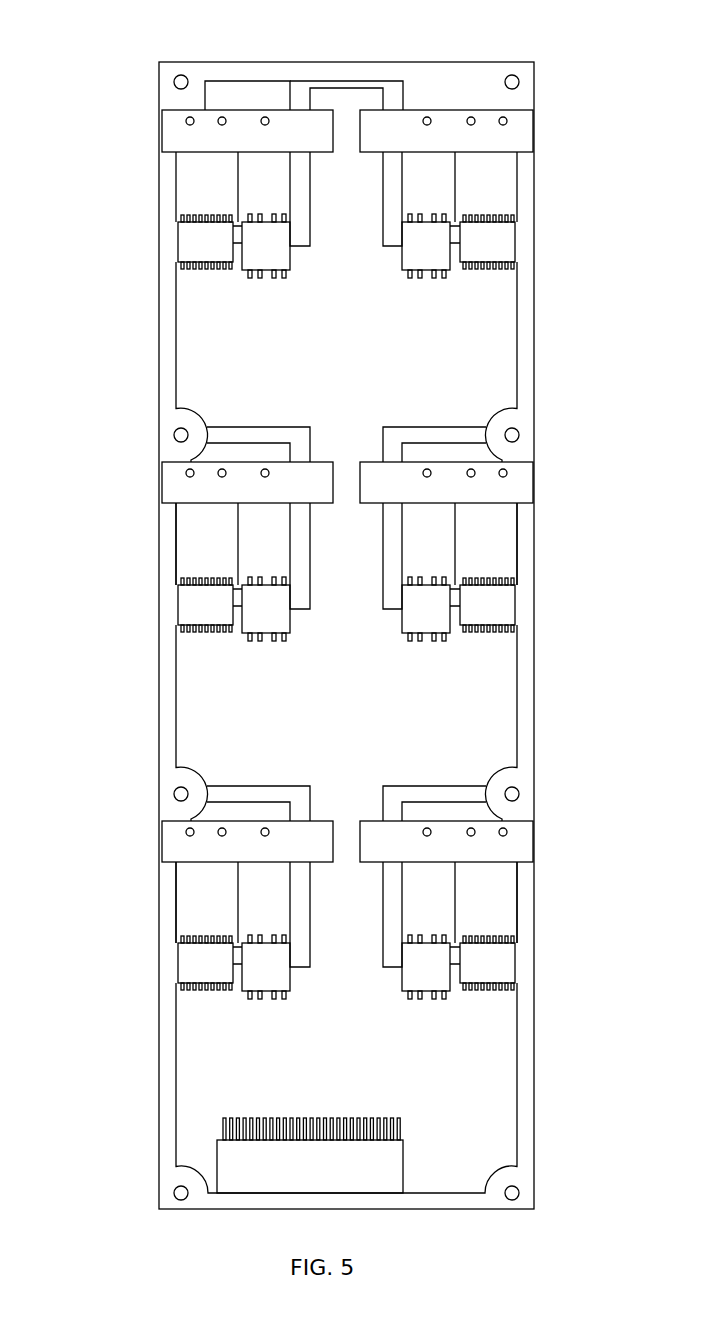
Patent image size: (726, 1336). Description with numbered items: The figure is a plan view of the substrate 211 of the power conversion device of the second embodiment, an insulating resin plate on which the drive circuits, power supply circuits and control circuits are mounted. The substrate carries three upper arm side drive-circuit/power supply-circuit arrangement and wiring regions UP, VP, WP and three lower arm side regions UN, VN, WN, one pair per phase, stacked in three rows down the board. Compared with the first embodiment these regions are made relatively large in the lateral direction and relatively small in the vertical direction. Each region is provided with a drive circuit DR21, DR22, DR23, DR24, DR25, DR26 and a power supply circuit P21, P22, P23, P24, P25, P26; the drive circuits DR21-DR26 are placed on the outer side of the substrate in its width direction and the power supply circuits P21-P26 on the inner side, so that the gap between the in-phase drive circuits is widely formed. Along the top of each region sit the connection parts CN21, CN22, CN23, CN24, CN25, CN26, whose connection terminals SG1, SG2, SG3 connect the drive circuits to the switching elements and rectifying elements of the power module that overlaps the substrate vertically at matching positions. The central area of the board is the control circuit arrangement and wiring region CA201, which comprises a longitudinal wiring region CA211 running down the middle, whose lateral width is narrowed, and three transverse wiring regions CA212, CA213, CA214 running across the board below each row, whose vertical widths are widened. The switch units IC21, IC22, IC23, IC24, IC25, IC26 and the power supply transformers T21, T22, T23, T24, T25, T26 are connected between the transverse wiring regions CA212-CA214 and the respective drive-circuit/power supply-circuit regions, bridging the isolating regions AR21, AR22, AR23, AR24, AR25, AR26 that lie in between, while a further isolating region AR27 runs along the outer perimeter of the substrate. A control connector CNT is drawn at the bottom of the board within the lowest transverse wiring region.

The substrate 211 is at (540, 348).
The upper arm side drive-circuit/power supply-circuit arrangement and wiring region UP is at (243, 96).
The lower arm side drive-circuit/power supply-circuit arrangement and wiring region UN is at (461, 96).
The upper arm side drive-circuit/power supply-circuit arrangement and wiring region VP is at (172, 515).
The lower arm side drive-circuit/power supply-circuit arrangement and wiring region VN is at (521, 515).
The upper arm side drive-circuit/power supply-circuit arrangement and wiring region WP is at (172, 874).
The lower arm side drive-circuit/power supply-circuit arrangement and wiring region WN is at (521, 874).
The connection part CN21 is at (185, 122).
The connection part CN22 is at (510, 122).
The connection part CN23 is at (176, 491).
The connection part CN24 is at (515, 490).
The connection part CN25 is at (176, 850).
The connection part CN26 is at (515, 848).
The connection terminal SG1 is at (191, 116).
The connection terminal SG2 is at (222, 116).
The connection terminal SG3 is at (266, 116).
The drive circuit DR21 is at (185, 172).
The drive circuit DR22 is at (508, 172).
The drive circuit DR23 is at (183, 523).
The drive circuit DR24 is at (508, 529).
The drive circuit DR25 is at (183, 882).
The drive circuit DR26 is at (508, 888).
The power supply circuit P21 is at (260, 194).
The power supply circuit P22 is at (433, 194).
The power supply circuit P23 is at (260, 554).
The power supply circuit P24 is at (433, 554).
The power supply circuit P25 is at (260, 913).
The power supply circuit P26 is at (433, 913).
The switch unit IC21 is at (197, 237).
The switch unit IC22 is at (495, 237).
The switch unit IC23 is at (197, 598).
The switch unit IC24 is at (495, 598).
The switch unit IC25 is at (197, 960).
The switch unit IC26 is at (495, 960).
The power supply transformer T21 is at (256, 251).
The power supply transformer T22 is at (425, 258).
The power supply transformer T23 is at (255, 628).
The power supply transformer T24 is at (425, 623).
The power supply transformer T25 is at (262, 998).
The power supply transformer T26 is at (425, 998).
The isolating region AR21 is at (297, 249).
The isolating region AR22 is at (390, 254).
The isolating region AR23 is at (297, 433).
The isolating region AR24 is at (390, 516).
The isolating region AR25 is at (297, 792).
The isolating region AR26 is at (390, 875).
The isolating region AR27 is at (160, 644).
The control circuit arrangement and wiring region CA201 is at (350, 410).
The longitudinal wiring region CA211 is at (360, 684).
The transverse wiring region CA212 is at (222, 325).
The transverse wiring region CA213 is at (222, 684).
The transverse wiring region CA214 is at (225, 1076).
The control connector CNT is at (185, 1150).